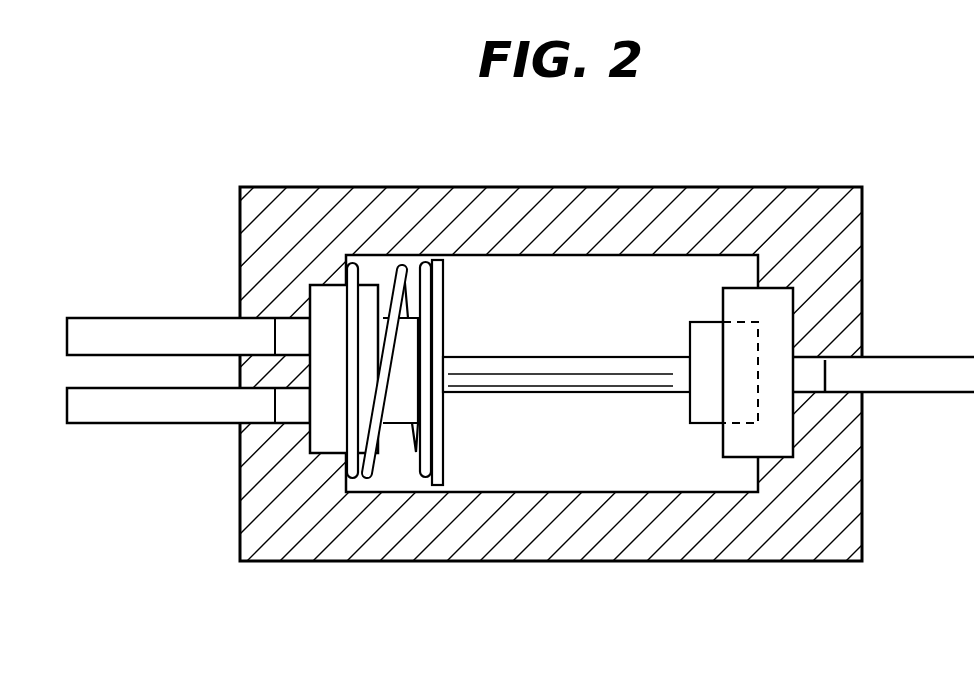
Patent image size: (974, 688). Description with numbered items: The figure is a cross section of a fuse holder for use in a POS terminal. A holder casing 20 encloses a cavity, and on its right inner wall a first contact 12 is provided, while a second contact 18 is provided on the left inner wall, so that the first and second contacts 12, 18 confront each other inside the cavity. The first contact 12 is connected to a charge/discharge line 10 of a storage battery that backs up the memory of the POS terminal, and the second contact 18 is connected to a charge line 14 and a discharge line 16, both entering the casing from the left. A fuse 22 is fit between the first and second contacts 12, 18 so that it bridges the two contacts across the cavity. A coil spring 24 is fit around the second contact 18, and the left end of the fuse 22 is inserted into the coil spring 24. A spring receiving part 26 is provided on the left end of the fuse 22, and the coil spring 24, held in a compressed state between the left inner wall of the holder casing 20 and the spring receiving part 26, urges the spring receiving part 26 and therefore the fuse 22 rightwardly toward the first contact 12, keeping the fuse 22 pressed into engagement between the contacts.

The charge/discharge line 10 is at (938, 357).
The first contact 12 is at (723, 437).
The charge line 14 is at (119, 318).
The discharge line 16 is at (116, 426).
The second contact 18 is at (330, 447).
The holder casing 20 is at (768, 562).
The fuse 22 is at (589, 357).
The coil spring 24 is at (427, 278).
The spring receiving part 26 is at (441, 337).